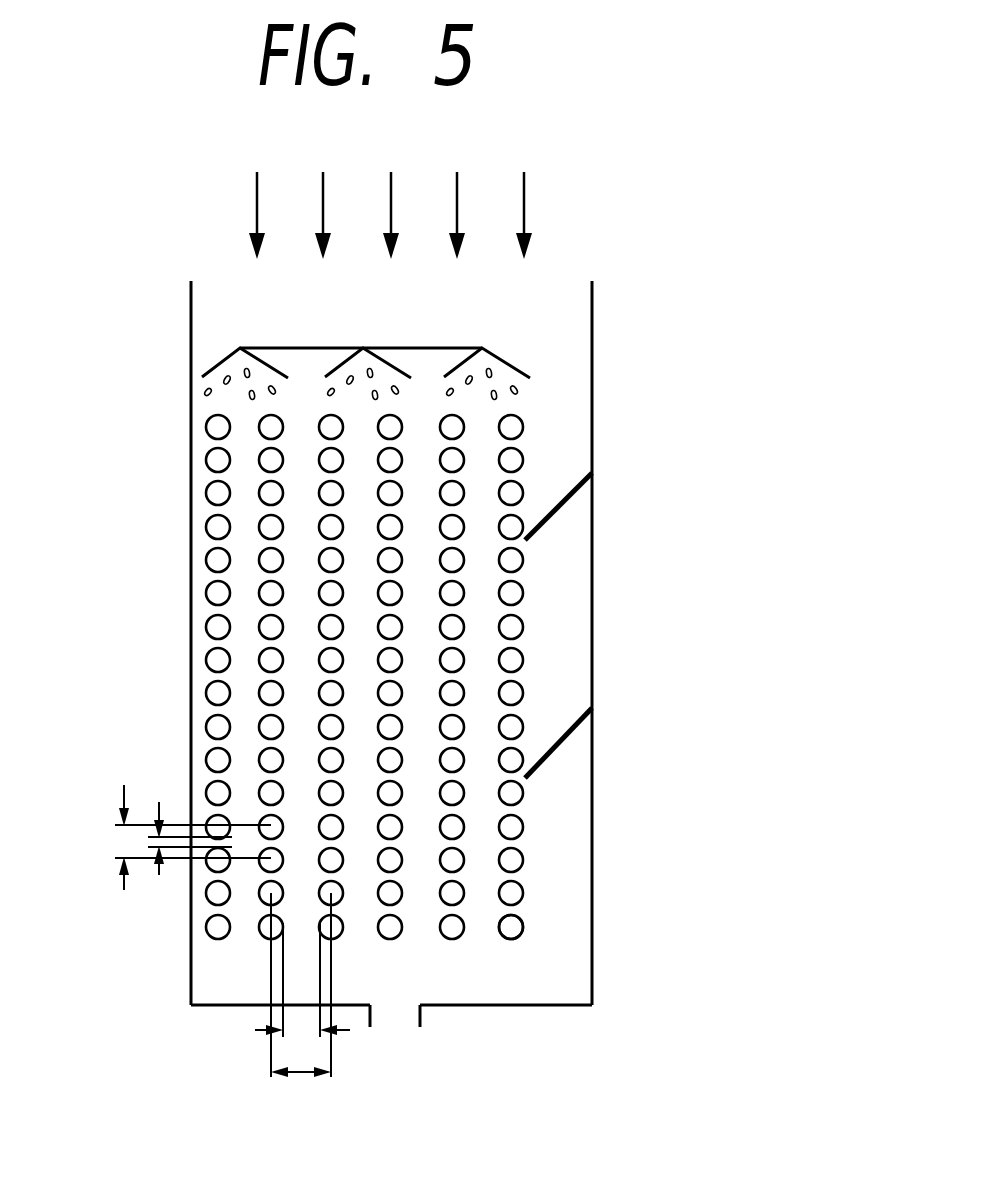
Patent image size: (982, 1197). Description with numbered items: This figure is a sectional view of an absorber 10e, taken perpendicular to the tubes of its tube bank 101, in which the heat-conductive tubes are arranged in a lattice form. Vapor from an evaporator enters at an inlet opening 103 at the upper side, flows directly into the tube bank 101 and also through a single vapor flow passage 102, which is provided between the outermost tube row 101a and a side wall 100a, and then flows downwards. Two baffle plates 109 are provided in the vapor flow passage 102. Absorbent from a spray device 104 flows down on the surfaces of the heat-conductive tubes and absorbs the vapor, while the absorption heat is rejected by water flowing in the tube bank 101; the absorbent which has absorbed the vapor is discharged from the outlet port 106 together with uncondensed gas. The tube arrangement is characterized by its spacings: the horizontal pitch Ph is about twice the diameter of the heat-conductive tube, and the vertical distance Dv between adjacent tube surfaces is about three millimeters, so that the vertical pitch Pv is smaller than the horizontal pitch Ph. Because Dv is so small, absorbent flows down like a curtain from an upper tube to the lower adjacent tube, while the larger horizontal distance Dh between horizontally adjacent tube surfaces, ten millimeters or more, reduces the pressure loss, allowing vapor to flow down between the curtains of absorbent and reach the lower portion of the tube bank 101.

The absorber 10e is at (462, 686).
The side wall 100a is at (593, 862).
The tube bank 101 is at (192, 516).
The outermost tube row 101a is at (515, 930).
The vapor flow passage 102 is at (557, 426).
The inlet opening 103 is at (502, 278).
The spray device 104 is at (455, 347).
The outlet port 106 is at (400, 1017).
The baffle plates 109 is at (552, 517).
The vertical distance between adjacent tube surfaces Dv is at (170, 837).
The vertical tube pitch Pv is at (170, 837).
The horizontal distance between adjacent tube surfaces Dh is at (305, 1040).
The horizontal tube pitch Ph is at (301, 1097).